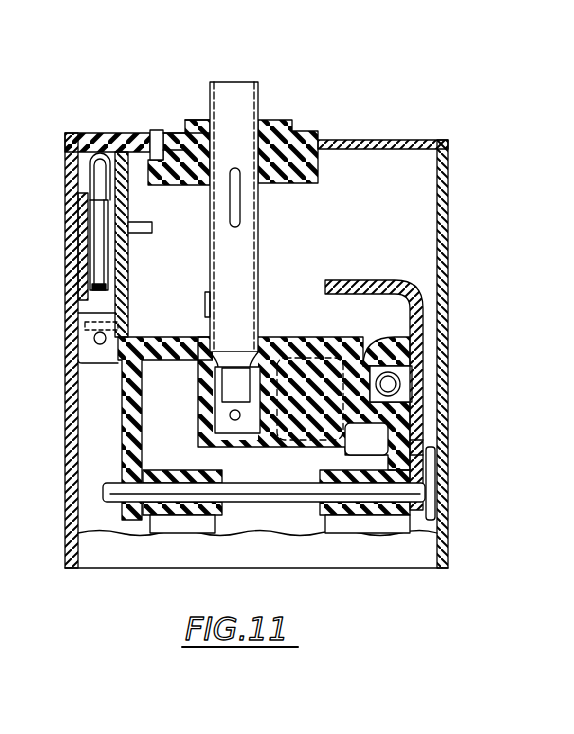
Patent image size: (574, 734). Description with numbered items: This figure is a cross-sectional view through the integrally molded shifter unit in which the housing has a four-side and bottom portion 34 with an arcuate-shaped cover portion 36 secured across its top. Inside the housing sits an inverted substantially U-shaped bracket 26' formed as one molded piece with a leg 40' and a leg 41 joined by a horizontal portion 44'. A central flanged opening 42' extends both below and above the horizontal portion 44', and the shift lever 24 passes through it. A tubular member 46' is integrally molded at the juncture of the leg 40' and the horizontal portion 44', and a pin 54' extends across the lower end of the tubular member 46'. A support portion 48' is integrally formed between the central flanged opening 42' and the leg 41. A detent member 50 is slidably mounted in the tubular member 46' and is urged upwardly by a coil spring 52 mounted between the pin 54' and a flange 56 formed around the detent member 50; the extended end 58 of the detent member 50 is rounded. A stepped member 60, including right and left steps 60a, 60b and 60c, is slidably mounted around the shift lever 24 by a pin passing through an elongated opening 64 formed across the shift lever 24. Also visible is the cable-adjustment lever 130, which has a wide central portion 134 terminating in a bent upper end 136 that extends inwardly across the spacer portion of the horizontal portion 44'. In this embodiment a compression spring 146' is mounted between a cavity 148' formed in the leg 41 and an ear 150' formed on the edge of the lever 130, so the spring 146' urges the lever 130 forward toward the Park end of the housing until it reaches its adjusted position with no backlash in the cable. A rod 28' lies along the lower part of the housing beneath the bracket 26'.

The shift lever 24 is at (260, 100).
The inverted substantially U-shaped bracket 26' is at (306, 278).
The rod 28' is at (264, 517).
The four-side and bottom portion 34 is at (445, 208).
The arcuate-shaped cover portion 36 is at (380, 142).
The leg 40' is at (74, 397).
The leg 41 is at (422, 413).
The central flanged opening 42' is at (179, 307).
The horizontal portion 44' is at (264, 413).
The tubular member 46' is at (148, 244).
The support portion 48' is at (266, 423).
The detent member 50 is at (90, 233).
The coil spring 52 is at (90, 266).
The pin 54' is at (69, 335).
The flange 56 is at (88, 193).
The extended end 58 is at (88, 133).
The stepped member 60 is at (189, 74).
The step 60a is at (160, 130).
The step 60b is at (176, 130).
The step 60c is at (200, 120).
The elongated opening 64 is at (235, 194).
The lever 130 is at (430, 452).
The wide central portion 134 is at (430, 445).
The bent upper end 136 is at (373, 280).
The compression spring 146' is at (443, 380).
The cavity 148' is at (439, 323).
The ear 150' is at (446, 361).